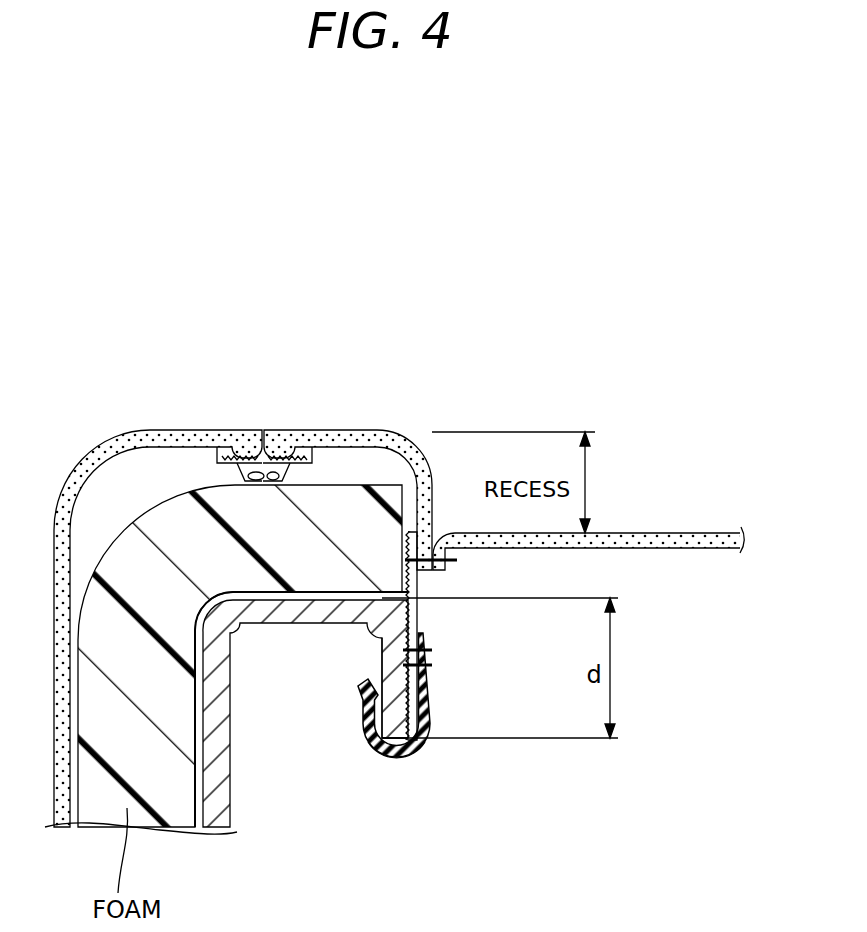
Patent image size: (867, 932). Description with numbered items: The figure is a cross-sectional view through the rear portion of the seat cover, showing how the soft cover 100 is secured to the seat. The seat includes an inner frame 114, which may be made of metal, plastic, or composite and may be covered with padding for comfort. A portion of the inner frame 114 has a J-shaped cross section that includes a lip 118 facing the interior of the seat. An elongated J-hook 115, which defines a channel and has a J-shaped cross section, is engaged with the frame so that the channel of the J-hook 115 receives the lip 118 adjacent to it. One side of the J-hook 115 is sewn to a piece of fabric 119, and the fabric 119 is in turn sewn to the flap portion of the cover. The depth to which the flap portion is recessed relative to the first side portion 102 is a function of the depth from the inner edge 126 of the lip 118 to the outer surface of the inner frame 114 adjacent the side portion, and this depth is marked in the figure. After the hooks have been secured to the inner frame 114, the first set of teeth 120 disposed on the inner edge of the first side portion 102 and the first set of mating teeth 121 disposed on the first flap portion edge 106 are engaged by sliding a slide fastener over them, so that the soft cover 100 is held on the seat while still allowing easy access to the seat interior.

The soft cover 100 is at (399, 557).
The first side portion 102 is at (203, 430).
The first flap portion edge 106 is at (326, 424).
The first set of teeth 120 is at (237, 455).
The first set of mating teeth 121 is at (292, 455).
The inner frame 114 is at (364, 709).
The lip 118 is at (393, 700).
The fabric 119 is at (420, 617).
The J-hook 115 is at (420, 745).
The inner edge 126 is at (407, 743).